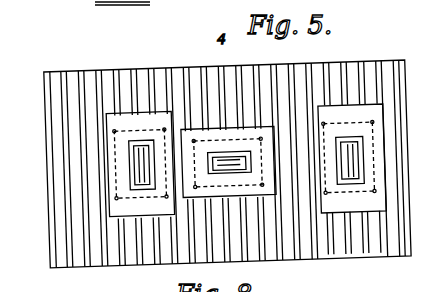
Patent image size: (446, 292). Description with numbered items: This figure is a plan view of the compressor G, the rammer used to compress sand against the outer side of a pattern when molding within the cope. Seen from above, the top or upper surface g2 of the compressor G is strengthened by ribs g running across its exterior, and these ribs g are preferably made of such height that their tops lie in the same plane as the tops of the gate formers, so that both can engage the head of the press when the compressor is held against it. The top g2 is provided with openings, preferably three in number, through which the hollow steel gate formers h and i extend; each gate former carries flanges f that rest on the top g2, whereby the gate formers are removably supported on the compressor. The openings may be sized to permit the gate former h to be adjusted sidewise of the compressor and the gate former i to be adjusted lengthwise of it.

The compressor G is at (228, 159).
The ribs g is at (296, 62).
The top surface g2 is at (326, 239).
The flanges f is at (113, 122).
The gate former h is at (141, 150).
The gate former i is at (225, 160).